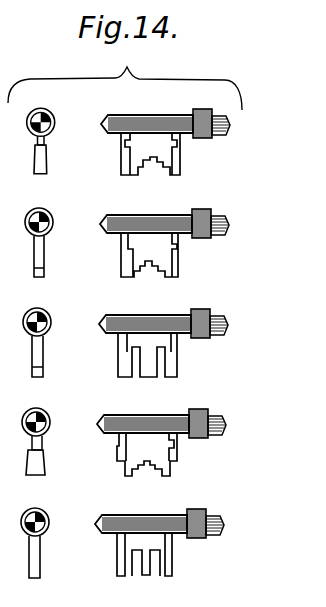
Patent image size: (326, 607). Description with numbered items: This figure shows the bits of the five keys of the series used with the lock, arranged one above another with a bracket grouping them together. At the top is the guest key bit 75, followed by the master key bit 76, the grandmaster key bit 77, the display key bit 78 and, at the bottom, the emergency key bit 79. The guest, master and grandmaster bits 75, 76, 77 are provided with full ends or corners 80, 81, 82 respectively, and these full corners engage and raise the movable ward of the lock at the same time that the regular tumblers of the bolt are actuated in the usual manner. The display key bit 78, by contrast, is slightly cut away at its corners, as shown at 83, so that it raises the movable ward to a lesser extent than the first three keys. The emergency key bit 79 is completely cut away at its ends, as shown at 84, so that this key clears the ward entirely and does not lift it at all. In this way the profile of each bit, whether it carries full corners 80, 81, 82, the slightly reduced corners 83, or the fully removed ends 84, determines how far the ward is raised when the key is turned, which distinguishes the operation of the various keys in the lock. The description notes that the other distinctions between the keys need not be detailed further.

The guest key bit 75 is at (140, 156).
The master key bit 76 is at (127, 253).
The grandmaster key bit 77 is at (126, 355).
The display key bit 78 is at (120, 441).
The emergency key bit 79 is at (116, 555).
The full end or corner 80 is at (178, 172).
The full end or corner 81 is at (180, 273).
The full end or corner 82 is at (178, 373).
The cut-away corner 83 is at (174, 473).
The cut-away end 84 is at (172, 567).